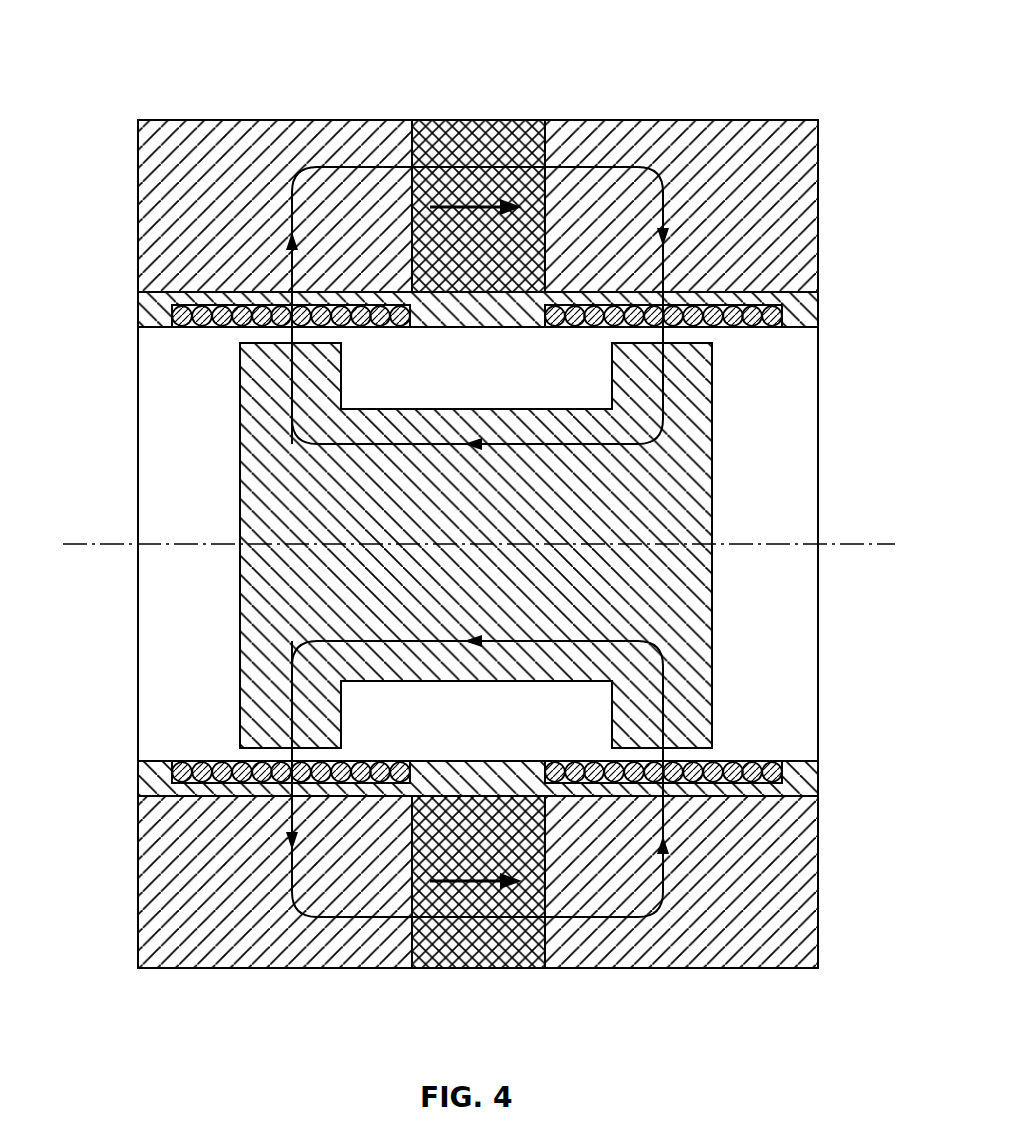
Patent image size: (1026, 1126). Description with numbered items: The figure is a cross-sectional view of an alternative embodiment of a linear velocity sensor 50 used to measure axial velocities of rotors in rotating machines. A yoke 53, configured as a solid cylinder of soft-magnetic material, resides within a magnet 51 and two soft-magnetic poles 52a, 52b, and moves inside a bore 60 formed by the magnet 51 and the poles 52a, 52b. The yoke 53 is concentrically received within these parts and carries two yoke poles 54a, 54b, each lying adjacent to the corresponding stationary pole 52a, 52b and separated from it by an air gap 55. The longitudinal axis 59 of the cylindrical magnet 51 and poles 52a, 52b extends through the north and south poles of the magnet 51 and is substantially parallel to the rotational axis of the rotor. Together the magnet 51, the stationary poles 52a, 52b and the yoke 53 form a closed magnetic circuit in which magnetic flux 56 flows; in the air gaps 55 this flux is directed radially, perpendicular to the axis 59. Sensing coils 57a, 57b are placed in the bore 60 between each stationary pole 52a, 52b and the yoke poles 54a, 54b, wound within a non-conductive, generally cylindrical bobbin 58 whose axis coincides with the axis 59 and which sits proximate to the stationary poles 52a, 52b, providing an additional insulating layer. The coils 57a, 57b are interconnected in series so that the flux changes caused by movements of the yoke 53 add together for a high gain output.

The linear velocity sensor 50 is at (131, 52).
The magnet 51 is at (468, 128).
The soft-magnetic pole 52a is at (176, 209).
The soft-magnetic pole 52b is at (800, 150).
The yoke 53 is at (284, 600).
The yoke pole 54a is at (270, 343).
The yoke pole 54b is at (703, 382).
The air gaps 55 is at (232, 330).
The magnetic flux 56 is at (663, 266).
The coil 57a is at (240, 335).
The coil 57b is at (713, 335).
The bobbin 58 is at (797, 320).
The longitudinal axis 59 is at (77, 543).
The bore 60 is at (795, 685).